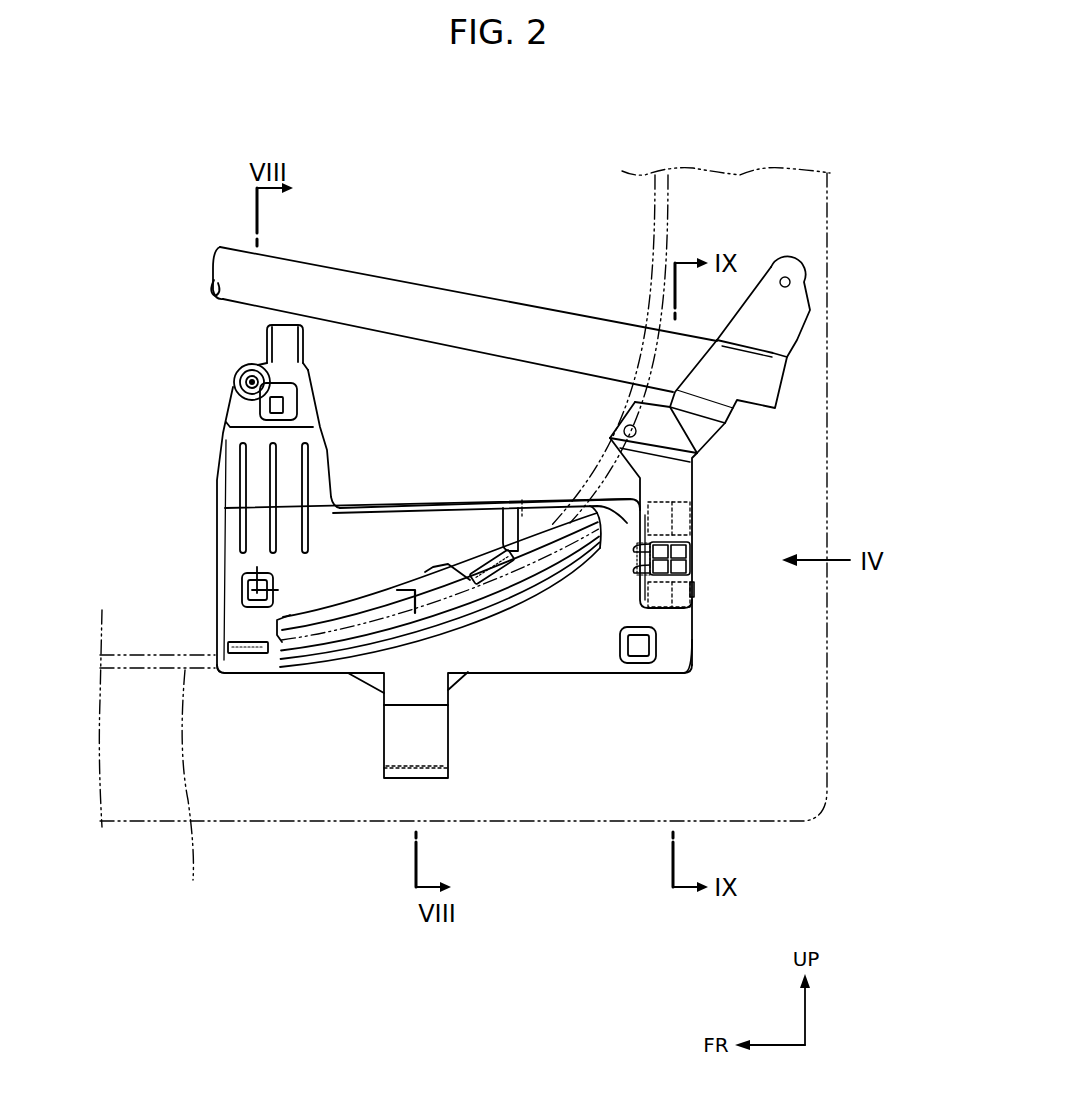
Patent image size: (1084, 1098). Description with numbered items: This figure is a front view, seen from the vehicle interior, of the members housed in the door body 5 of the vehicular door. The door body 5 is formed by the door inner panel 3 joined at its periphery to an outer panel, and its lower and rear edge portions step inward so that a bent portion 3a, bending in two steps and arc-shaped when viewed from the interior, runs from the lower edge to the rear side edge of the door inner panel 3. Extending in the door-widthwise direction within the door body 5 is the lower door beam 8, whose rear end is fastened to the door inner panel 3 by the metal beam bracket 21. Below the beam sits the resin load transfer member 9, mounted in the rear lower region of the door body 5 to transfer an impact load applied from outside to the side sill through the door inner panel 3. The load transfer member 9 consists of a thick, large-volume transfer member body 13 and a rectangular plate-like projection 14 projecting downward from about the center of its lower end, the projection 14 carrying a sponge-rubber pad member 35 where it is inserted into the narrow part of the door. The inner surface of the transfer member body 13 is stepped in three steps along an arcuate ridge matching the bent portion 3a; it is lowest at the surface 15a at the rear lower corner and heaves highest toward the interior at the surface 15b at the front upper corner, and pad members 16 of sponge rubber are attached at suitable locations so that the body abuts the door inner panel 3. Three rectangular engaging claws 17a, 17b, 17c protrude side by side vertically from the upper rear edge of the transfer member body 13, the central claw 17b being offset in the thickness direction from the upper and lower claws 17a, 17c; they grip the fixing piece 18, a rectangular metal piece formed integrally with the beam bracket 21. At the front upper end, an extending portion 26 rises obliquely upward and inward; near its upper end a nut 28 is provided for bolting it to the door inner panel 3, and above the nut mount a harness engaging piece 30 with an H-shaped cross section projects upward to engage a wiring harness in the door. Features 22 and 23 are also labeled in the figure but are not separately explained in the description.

The door inner panel 3 is at (512, 497).
The door body 5 is at (835, 777).
The bent portion 3a is at (188, 790).
The lower door beam 8 is at (470, 300).
The load transfer member 9 is at (454, 638).
The transfer member body 13 is at (553, 660).
The projection 14 is at (389, 700).
The surface 15a is at (592, 645).
The surface 15b is at (293, 543).
The pad members 16 is at (288, 400).
The engaging claw 17a is at (688, 515).
The engaging claw 17b is at (688, 550).
The engaging claw 17c is at (688, 597).
The fixing piece 18 is at (688, 485).
The beam bracket 21 is at (782, 343).
The lower flange 22 is at (319, 673).
The ledge portion 23 is at (372, 515).
The extending portion 26 is at (232, 405).
The nut 28 is at (246, 372).
The harness engaging piece 30 is at (287, 330).
The pad member 35 is at (401, 762).